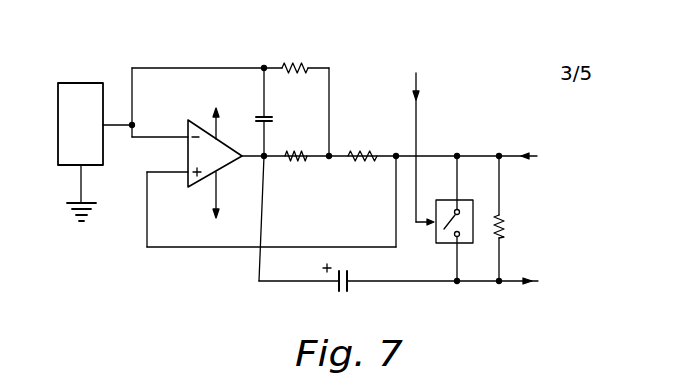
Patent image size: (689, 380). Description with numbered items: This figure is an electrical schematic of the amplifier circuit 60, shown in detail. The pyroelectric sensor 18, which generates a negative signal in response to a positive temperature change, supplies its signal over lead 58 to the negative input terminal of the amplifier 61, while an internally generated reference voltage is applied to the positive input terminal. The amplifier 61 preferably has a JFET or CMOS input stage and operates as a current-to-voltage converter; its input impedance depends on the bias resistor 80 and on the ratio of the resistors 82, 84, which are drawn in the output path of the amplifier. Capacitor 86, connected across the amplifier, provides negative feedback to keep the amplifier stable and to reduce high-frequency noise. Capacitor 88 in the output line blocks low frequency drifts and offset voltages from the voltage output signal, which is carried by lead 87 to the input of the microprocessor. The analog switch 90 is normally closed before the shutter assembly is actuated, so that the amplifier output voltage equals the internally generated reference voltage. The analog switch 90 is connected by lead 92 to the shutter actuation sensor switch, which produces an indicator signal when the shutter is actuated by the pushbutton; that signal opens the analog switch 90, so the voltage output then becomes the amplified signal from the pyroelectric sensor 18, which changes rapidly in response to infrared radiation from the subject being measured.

The pyroelectric sensor 18 is at (70, 90).
The lead 58 is at (138, 139).
The amplifier circuit 60 is at (213, 282).
The amplifier 61 is at (222, 158).
The bias resistor 80 is at (304, 62).
The resistor 82 is at (284, 163).
The resistor 84 is at (349, 163).
The capacitor 86 is at (272, 112).
The lead 87 is at (511, 273).
The capacitor 88 is at (343, 294).
The analog switch 90 is at (445, 238).
The lead 92 is at (416, 78).